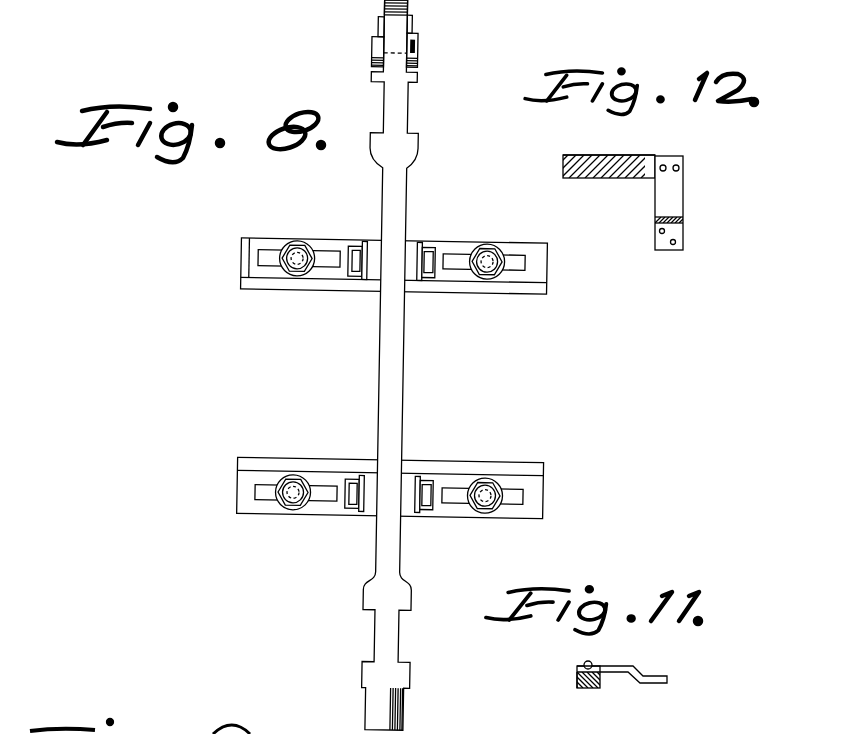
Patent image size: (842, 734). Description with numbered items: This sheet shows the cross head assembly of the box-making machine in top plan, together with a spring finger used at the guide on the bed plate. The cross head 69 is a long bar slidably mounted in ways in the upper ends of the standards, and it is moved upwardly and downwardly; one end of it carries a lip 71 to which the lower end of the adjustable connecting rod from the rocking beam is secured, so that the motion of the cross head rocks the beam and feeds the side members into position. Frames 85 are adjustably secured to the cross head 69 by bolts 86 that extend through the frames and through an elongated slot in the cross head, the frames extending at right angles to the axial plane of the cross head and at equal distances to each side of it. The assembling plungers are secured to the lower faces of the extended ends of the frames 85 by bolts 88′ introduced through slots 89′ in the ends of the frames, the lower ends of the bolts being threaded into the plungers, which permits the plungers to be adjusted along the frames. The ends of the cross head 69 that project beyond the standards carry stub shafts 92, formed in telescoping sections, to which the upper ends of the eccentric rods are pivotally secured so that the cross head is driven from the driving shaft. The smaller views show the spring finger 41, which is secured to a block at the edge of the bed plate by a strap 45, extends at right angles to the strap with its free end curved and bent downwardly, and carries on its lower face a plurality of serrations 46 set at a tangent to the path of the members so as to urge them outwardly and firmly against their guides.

In FIG. 8, the cross head 69 is at (386, 372).
In FIG. 8, the frames 85 is at (508, 291).
In FIG. 8, the bolts 86 is at (355, 267).
In FIG. 8, the bolts 88′ is at (327, 191).
In FIG. 8, the slots 89′ is at (258, 259).
In FIG. 8, the stub shafts 92 is at (375, 26).
In FIG. 8, the lip 71 is at (386, 42).
In FIG. 12, the spring finger 41 is at (613, 178).
In FIG. 11, the spring finger 41 is at (577, 675).
In FIG. 12, the strap 45 is at (673, 198).
In FIG. 11, the strap 45 is at (637, 667).
In FIG. 12, the serrations 46 is at (617, 157).
In FIG. 11, the serrations 46 is at (585, 688).